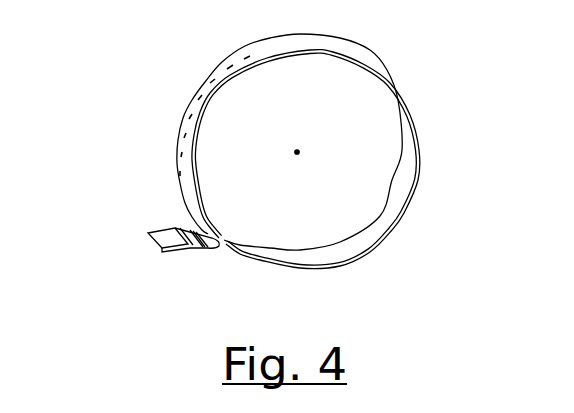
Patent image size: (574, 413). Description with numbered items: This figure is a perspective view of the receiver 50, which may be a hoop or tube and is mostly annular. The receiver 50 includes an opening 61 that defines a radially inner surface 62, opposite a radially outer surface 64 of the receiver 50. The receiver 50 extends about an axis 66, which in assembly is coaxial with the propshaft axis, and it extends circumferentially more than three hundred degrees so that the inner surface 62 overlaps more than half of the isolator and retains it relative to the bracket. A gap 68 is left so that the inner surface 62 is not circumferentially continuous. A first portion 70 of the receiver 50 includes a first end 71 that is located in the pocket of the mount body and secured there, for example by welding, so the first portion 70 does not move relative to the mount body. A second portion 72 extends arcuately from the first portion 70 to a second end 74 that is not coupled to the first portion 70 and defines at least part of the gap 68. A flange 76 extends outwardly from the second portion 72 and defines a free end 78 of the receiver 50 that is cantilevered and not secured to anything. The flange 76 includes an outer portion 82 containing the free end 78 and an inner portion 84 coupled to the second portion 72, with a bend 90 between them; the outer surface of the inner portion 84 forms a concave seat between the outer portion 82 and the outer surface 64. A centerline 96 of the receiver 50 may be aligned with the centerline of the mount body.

The receiver 50 is at (428, 123).
The opening 61 is at (368, 93).
The radially inner surface 62 is at (357, 231).
The radially outer surface 64 is at (266, 47).
The axis 66 is at (297, 152).
The gap 68 is at (222, 236).
The first portion 70 is at (315, 259).
The first end 71 is at (227, 250).
The second portion 72 is at (347, 50).
The second end 74 is at (220, 250).
The flange 76 is at (157, 218).
The free end 78 is at (148, 235).
The outer portion 82 is at (153, 244).
The inner portion 84 is at (194, 224).
The bend 90 is at (181, 254).
The centerline 96 is at (214, 78).